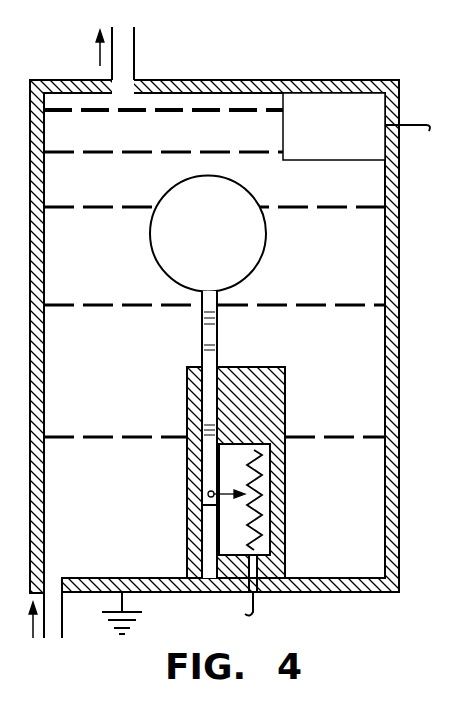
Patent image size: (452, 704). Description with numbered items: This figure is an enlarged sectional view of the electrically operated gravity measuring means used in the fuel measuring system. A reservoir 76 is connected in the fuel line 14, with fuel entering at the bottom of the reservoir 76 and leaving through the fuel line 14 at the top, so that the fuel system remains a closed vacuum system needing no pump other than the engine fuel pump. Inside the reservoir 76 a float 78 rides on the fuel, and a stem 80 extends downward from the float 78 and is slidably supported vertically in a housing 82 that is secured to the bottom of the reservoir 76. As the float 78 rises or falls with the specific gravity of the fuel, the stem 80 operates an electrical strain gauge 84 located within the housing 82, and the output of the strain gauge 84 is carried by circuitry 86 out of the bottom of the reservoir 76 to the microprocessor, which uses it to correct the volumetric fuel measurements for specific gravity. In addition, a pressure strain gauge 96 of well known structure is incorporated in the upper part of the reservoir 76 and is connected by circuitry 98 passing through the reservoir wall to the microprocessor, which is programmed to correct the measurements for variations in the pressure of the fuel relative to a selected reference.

The fuel line 14 is at (134, 42).
The reservoir 76 is at (399, 272).
The float 78 is at (208, 234).
The stem 80 is at (210, 350).
The housing 82 is at (265, 408).
The electrical strain gauge 84 is at (255, 515).
The circuitry 86 is at (258, 607).
The pressure strain gauge 96 is at (333, 100).
The circuitry 98 is at (424, 122).